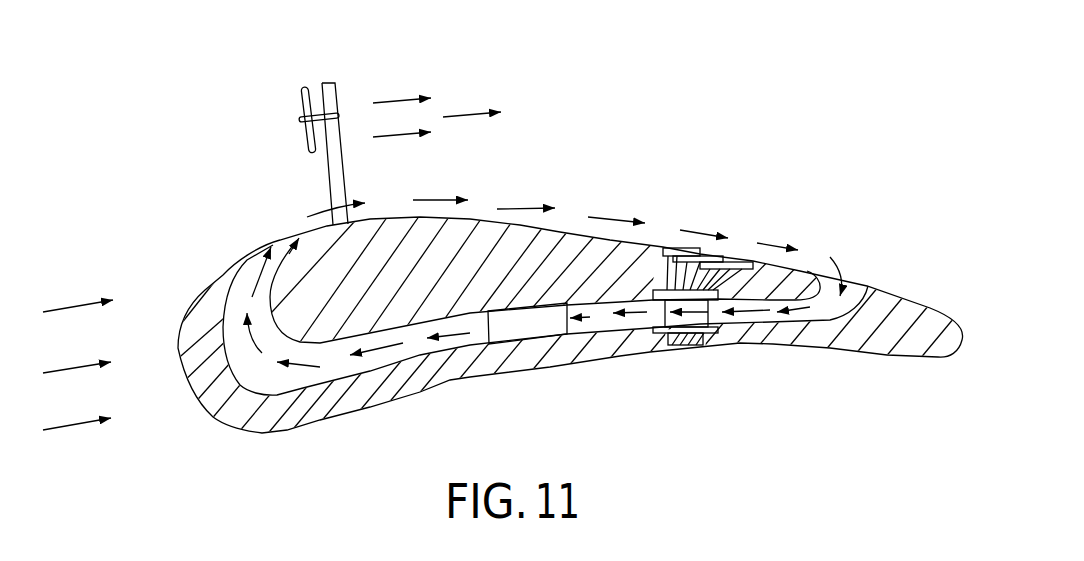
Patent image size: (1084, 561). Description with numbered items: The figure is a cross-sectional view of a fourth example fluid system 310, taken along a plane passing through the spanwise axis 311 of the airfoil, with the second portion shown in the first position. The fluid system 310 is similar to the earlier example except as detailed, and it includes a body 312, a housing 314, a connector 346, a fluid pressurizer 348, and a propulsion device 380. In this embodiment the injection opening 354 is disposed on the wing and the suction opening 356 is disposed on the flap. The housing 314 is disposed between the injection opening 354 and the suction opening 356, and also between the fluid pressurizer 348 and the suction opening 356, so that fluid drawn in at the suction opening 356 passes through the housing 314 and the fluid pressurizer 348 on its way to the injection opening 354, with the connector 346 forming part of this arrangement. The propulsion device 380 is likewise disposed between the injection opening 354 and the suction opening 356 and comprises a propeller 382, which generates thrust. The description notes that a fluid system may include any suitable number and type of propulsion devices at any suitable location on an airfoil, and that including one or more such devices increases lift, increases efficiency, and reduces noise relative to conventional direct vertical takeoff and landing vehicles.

The fluid system 310 is at (756, 147).
The spanwise axis 311 is at (503, 287).
The body 312 is at (579, 117).
The housing 314 is at (743, 222).
The connector 346 is at (692, 345).
The fluid pressurizer 348 is at (530, 327).
The injection opening 354 is at (295, 235).
The suction opening 356 is at (857, 286).
The propulsion device 380 is at (336, 124).
The propeller 382 is at (310, 84).